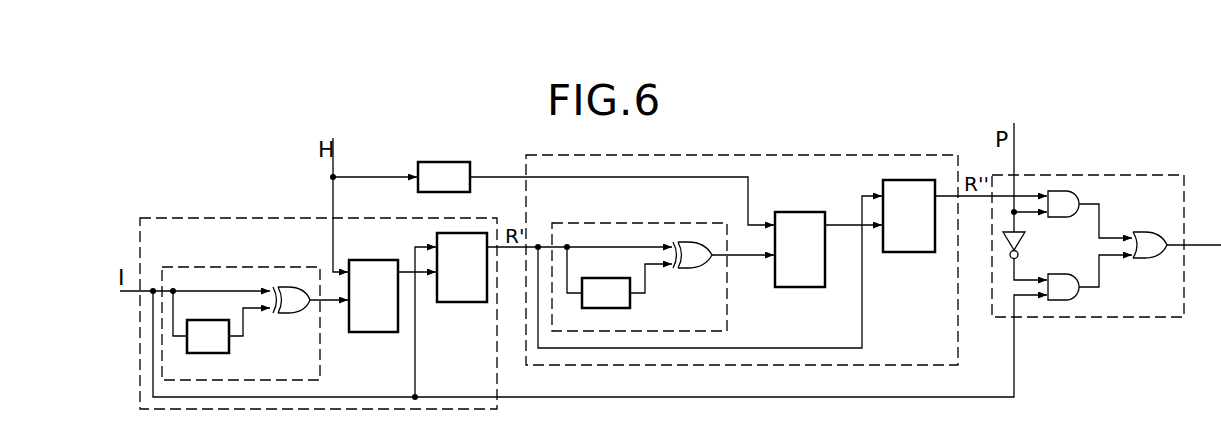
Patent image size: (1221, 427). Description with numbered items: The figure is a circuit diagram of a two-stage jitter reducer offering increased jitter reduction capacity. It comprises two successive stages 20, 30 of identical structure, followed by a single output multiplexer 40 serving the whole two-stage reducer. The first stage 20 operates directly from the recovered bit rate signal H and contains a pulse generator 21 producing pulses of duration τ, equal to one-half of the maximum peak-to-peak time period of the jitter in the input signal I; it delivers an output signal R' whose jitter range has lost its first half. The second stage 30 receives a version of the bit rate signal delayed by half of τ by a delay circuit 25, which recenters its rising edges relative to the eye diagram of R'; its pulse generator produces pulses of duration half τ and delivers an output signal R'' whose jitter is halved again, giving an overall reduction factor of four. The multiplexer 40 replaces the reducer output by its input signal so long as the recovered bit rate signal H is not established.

The first stage 20 is at (237, 218).
The delay and exclusive-OR circuit 21 is at (220, 267).
The delay circuit 25 is at (437, 162).
The second stage 30 is at (766, 155).
The output multiplexer 40 is at (1104, 175).